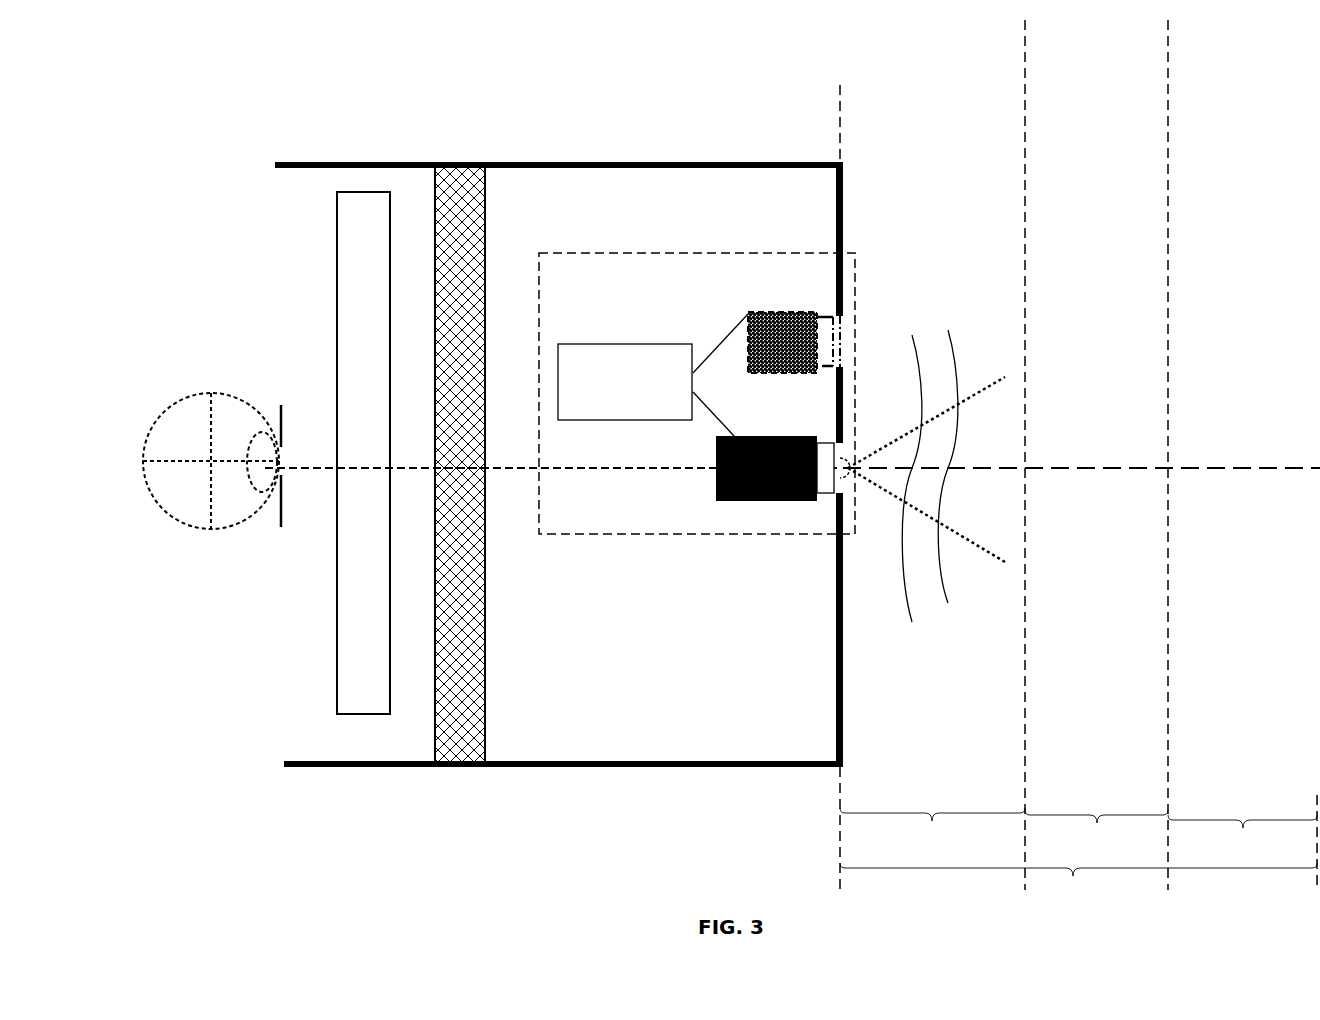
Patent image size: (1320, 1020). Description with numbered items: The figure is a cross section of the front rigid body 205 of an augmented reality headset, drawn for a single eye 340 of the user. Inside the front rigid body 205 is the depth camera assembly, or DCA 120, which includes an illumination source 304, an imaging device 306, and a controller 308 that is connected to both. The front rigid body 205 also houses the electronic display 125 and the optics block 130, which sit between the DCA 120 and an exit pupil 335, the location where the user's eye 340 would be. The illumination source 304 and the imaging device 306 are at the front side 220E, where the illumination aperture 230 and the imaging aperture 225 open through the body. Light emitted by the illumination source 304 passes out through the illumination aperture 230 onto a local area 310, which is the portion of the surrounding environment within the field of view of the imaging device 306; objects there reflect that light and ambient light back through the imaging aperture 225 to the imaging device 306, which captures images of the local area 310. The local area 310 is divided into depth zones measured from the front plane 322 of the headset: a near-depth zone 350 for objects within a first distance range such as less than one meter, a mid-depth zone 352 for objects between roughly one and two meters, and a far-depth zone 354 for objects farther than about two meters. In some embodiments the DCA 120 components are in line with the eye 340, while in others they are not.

The front plane 322 is at (823, 68).
The electronic display 125 is at (486, 213).
The illumination source 304 is at (798, 309).
The illumination aperture 230 is at (845, 338).
The exit pupil 335 is at (278, 403).
The DCA 120 is at (833, 282).
The controller 308 is at (606, 403).
The eye 340 is at (177, 521).
The imaging device 306 is at (747, 504).
The imaging aperture 225 is at (849, 474).
The front side 220E is at (846, 702).
The front rigid body 205 is at (569, 769).
The optics block 130 is at (379, 724).
The near-depth zone 350 is at (980, 852).
The mid-depth zone 352 is at (1142, 855).
The far-depth zone 354 is at (1287, 855).
The local area 310 is at (1063, 934).